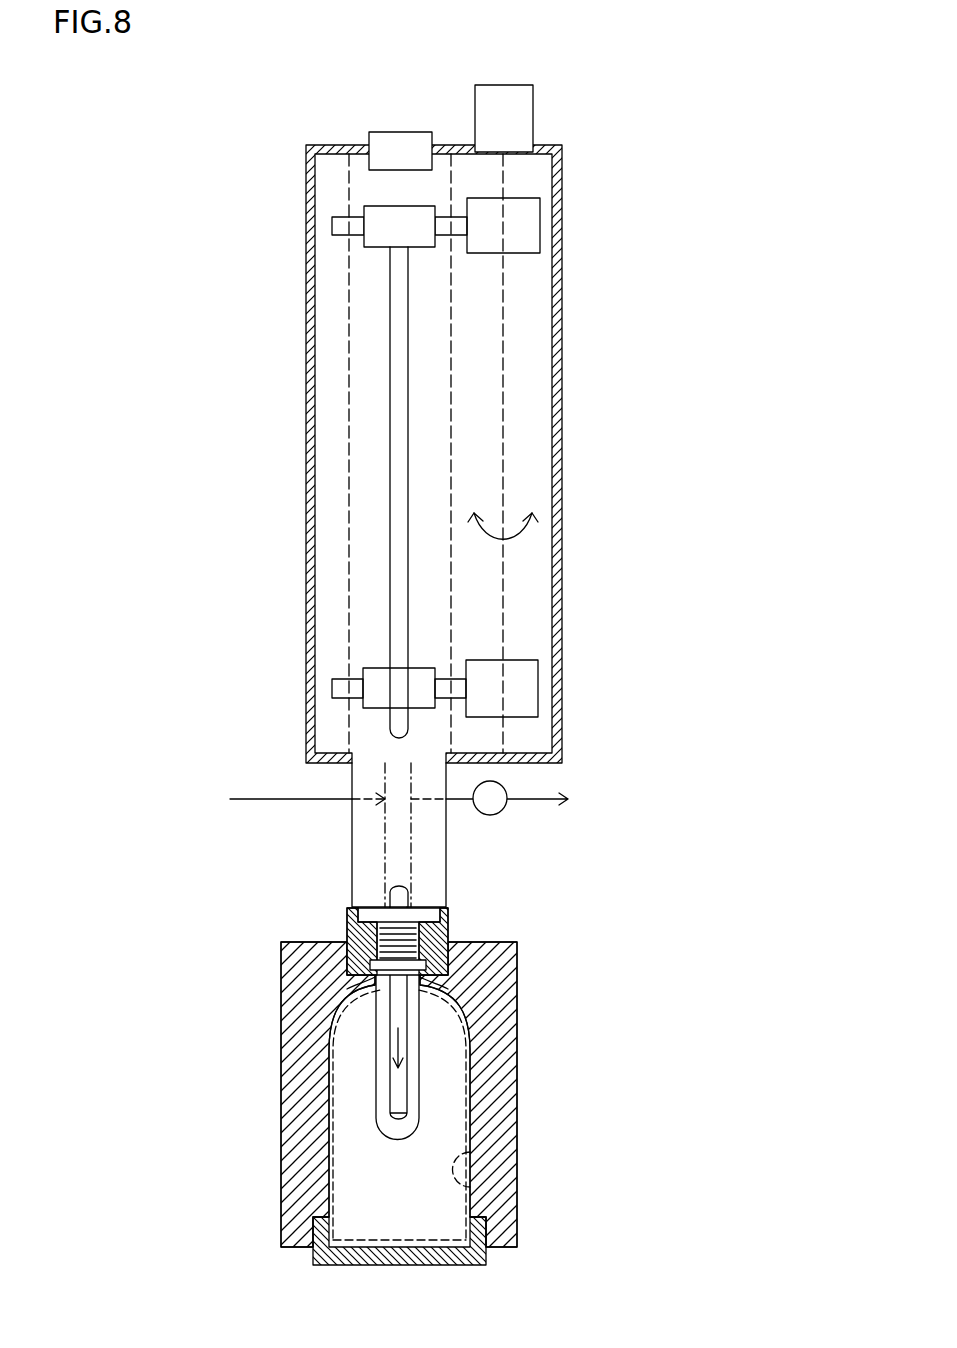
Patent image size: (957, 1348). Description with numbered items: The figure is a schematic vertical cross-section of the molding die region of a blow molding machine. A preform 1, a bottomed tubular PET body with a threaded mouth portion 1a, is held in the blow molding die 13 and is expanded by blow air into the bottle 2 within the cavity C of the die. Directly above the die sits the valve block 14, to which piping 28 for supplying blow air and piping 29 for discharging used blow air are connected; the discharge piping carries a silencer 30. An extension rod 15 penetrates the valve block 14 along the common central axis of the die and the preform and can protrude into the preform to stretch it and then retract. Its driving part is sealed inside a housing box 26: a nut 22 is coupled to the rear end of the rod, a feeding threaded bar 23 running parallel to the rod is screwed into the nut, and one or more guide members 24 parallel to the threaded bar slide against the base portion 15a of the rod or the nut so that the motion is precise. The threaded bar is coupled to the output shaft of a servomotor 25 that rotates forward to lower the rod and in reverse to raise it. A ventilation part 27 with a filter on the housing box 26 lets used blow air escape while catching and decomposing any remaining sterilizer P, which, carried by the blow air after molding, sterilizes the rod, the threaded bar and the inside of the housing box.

The preform 1 is at (413, 1066).
The mouth portion 1a is at (450, 935).
The bottle 2 is at (465, 1113).
The blow molding die 13 is at (281, 1197).
The valve block 14 is at (352, 851).
The extension rod 15 is at (390, 405).
The base portion 15a is at (383, 206).
The nut 22 is at (540, 222).
The feeding threaded bar 23 is at (503, 365).
The guide member 24 is at (451, 553).
The servomotor 25 is at (533, 108).
The housing box 26 is at (561, 535).
The ventilation part 27 is at (398, 132).
The piping for supplying blow air 28 is at (270, 799).
The piping for discharging blow air 29 is at (537, 800).
The silencer 30 is at (490, 815).
The sterilizer P is at (397, 1113).
The cavity C is at (457, 1170).